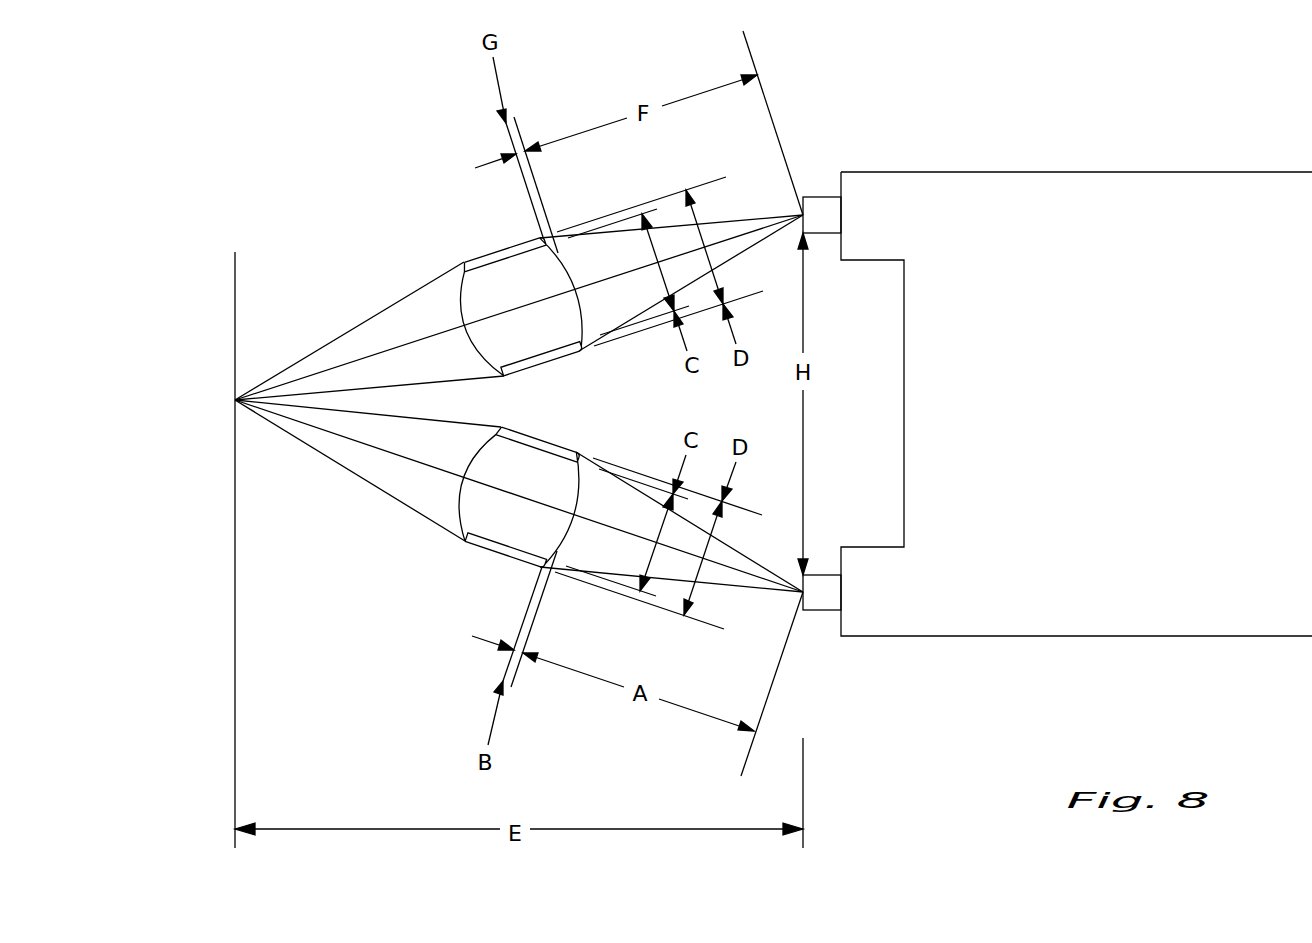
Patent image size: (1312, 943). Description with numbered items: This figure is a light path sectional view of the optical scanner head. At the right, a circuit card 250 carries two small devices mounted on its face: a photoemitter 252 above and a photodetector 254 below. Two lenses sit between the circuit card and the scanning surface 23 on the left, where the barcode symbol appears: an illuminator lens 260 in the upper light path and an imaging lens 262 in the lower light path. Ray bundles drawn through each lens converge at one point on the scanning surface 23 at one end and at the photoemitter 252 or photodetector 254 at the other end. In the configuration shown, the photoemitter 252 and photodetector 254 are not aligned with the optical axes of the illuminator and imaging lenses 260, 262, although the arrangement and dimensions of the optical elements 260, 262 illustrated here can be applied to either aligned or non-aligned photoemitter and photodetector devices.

The scanning surface 23 is at (235, 299).
The circuit card 250 is at (991, 172).
The photoemitter 252 is at (823, 197).
The photodetector 254 is at (823, 610).
The illuminator lens 260 is at (487, 252).
The imaging lens 262 is at (472, 546).